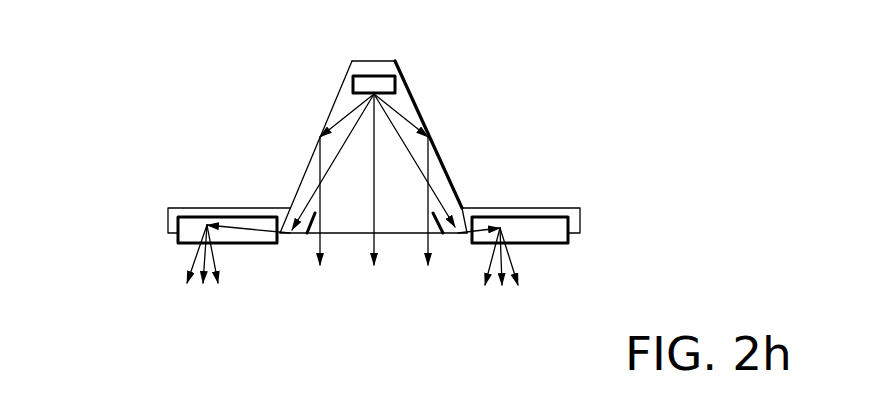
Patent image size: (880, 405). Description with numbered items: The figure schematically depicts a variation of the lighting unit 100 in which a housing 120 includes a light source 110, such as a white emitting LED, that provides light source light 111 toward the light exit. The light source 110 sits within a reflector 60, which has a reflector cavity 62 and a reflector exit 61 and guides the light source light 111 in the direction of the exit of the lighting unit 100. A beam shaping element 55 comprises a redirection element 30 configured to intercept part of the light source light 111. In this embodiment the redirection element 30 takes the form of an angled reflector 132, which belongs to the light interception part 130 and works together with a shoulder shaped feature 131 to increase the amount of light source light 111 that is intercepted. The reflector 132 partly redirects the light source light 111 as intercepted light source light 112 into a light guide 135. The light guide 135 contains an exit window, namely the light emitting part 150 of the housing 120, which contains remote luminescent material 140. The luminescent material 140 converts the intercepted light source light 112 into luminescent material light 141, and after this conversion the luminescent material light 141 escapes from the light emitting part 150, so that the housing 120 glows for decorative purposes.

The lighting unit 100 is at (127, 90).
The beam shaping element 55 is at (458, 127).
The reflector 60 is at (402, 128).
The reflector cavity 62 is at (358, 167).
The light source 110 is at (390, 84).
The light source light 111 is at (376, 240).
The intercepted light source light 112 is at (275, 243).
The housing 120 is at (530, 186).
The light interception part 130 is at (300, 208).
The shoulder shaped feature 131 is at (452, 207).
The reflector 132 is at (306, 240).
The light guide 135 is at (277, 208).
The luminescent material 140 is at (195, 222).
The luminescent material light 141 is at (190, 253).
The light emitting part 150 is at (250, 245).
The redirection element 30 is at (352, 252).
The reflector exit 61 is at (353, 235).